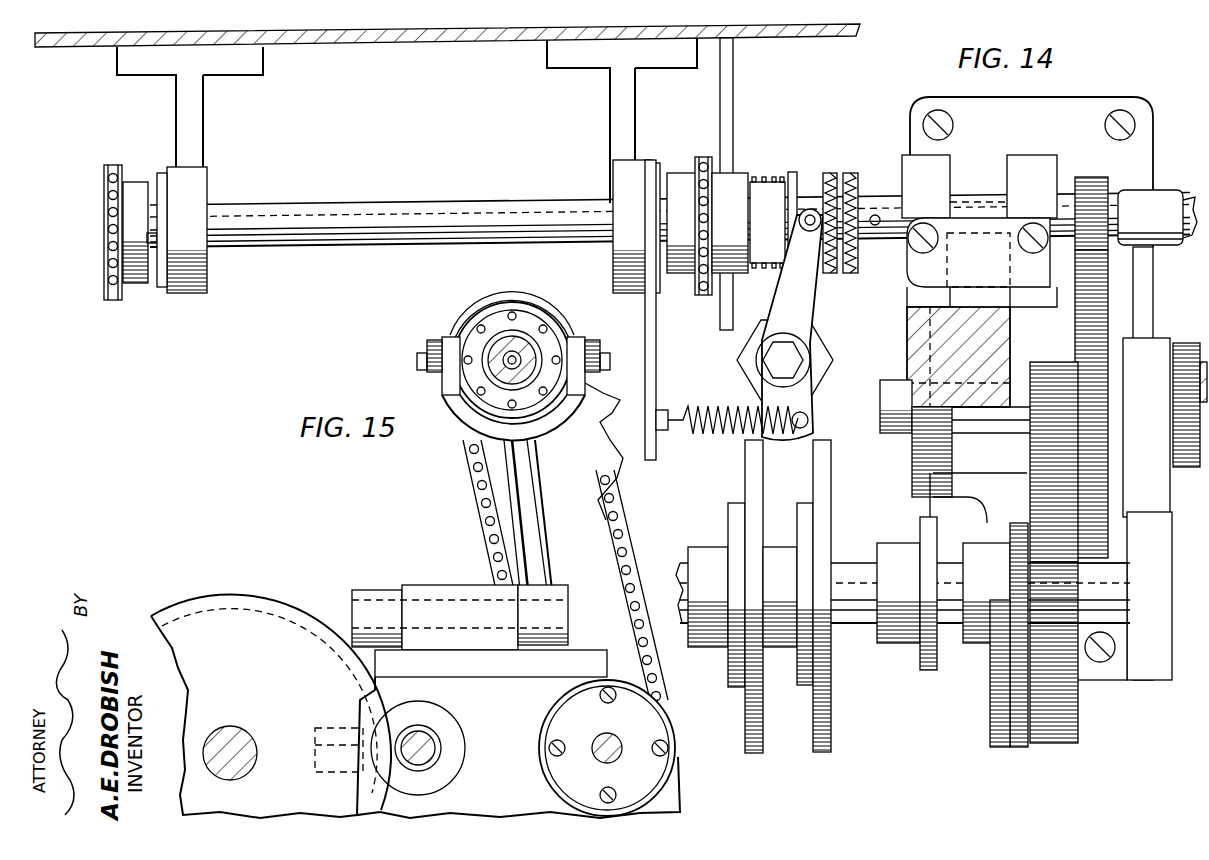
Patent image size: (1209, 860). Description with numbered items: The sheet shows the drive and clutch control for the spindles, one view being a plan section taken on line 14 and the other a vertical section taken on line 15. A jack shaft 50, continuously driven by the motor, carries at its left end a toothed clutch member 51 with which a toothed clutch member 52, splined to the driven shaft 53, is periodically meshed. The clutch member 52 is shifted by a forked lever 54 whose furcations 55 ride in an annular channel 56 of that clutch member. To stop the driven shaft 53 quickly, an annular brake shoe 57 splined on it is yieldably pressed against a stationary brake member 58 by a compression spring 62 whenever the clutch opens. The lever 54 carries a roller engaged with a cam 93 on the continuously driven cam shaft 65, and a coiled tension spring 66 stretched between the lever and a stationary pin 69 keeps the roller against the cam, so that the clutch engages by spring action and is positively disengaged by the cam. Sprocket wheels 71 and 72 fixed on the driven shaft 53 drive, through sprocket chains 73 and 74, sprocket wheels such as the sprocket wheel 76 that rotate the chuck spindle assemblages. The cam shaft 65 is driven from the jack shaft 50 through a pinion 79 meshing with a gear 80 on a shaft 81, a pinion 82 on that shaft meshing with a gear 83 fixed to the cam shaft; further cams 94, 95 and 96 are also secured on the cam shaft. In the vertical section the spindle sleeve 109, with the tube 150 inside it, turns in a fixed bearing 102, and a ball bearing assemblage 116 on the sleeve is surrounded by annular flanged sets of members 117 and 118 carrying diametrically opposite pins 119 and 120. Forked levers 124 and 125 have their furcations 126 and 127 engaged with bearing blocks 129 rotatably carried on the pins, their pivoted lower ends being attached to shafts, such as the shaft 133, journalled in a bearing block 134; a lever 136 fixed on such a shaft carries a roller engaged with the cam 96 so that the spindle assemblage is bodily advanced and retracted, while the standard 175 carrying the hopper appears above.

In FIG. 14, the standard 175 is at (413, 36).
In FIG. 14, the sprocket wheel 71 is at (113, 165).
In FIG. 14, the sprocket chain 73 is at (105, 300).
In FIG. 14, the driven shaft 53 is at (392, 205).
In FIG. 14, the sprocket wheel 72 is at (705, 157).
In FIG. 14, the sprocket chain 74 is at (700, 296).
In FIG. 15, the sprocket chain 74 is at (470, 490).
In FIG. 14, the compression spring 62 is at (762, 177).
In FIG. 14, the furcations 55 is at (808, 208).
In FIG. 14, the toothed clutch member 52 is at (832, 173).
In FIG. 14, the toothed clutch member 51 is at (852, 172).
In FIG. 14, the section line 15— 15 is at (1070, 157).
In FIG. 14, the pinion 79 is at (1085, 177).
In FIG. 14, the jack shaft 50 is at (1190, 200).
In FIG. 15, the jack shaft 50 is at (600, 738).
In FIG. 14, the gear 80 is at (1107, 287).
In FIG. 14, the annular brake shoe 57 is at (740, 273).
In FIG. 14, the stationary brake member 58 is at (727, 272).
In FIG. 14, the annular channel 56 is at (815, 278).
In FIG. 14, the forked lever 54 is at (818, 400).
In FIG. 14, the coiled tension spring 66 is at (715, 408).
In FIG. 14, the stationary pin 69 is at (668, 410).
In FIG. 14, the bearing block 134 is at (907, 325).
In FIG. 15, the bearing block 134 is at (437, 585).
In FIG. 14, the pinion 82 is at (1036, 365).
In FIG. 14, the shaft 81 is at (1183, 387).
In FIG. 15, the shaft 81 is at (430, 742).
In FIG. 14, the cam shaft 65 is at (863, 623).
In FIG. 15, the cam shaft 65 is at (240, 728).
In FIG. 14, the cam 93 is at (747, 705).
In FIG. 14, the cam 94 is at (813, 703).
In FIG. 14, the cam 95 is at (930, 672).
In FIG. 14, the cam 96 is at (990, 738).
In FIG. 15, the cam 96 is at (222, 598).
In FIG. 14, the gear 83 is at (1078, 706).
In FIG. 15, the sprocket wheel 76 is at (465, 302).
In FIG. 15, the annular flanged set of members 117 is at (497, 300).
In FIG. 15, the annular flanged set of members 118 is at (530, 312).
In FIG. 15, the sleeve 109 is at (503, 348).
In FIG. 15, the tube 150 is at (517, 350).
In FIG. 15, the ball bearing assemblage 116 is at (533, 325).
In FIG. 15, the bearing block 129 is at (453, 337).
In FIG. 15, the pin 120 is at (445, 345).
In FIG. 15, the pin 119 is at (417, 358).
In FIG. 15, the bearing 102 is at (598, 428).
In FIG. 15, the furcations 126 is at (448, 410).
In FIG. 15, the furcations 127 is at (458, 425).
In FIG. 15, the forked lever 124 is at (533, 462).
In FIG. 15, the forked lever 125 is at (540, 508).
In FIG. 15, the shaft 133 is at (370, 600).
In FIG. 15, the lever 136 is at (400, 650).
In FIG. 15, the section line 14— 14 is at (150, 626).